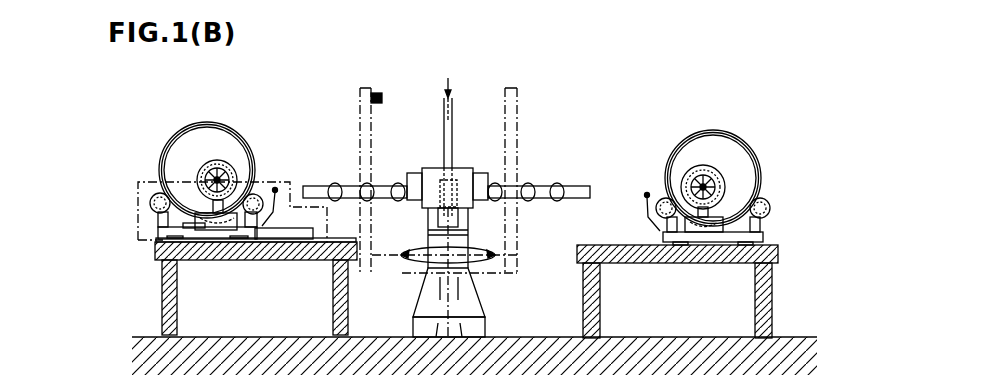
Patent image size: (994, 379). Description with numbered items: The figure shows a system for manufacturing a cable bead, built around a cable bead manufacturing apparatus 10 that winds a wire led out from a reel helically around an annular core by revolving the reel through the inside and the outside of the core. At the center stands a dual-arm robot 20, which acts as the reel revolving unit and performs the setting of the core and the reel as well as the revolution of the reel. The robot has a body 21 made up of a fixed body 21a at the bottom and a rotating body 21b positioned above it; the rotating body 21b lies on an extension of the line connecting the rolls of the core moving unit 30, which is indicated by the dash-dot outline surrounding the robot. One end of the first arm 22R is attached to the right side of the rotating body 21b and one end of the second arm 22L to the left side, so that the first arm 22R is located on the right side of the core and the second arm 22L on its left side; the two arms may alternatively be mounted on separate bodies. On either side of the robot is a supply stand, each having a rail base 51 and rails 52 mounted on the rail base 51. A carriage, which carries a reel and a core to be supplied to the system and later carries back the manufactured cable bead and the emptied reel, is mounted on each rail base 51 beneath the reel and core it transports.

The cable bead manufacturing apparatus 10 is at (448, 118).
The dual-arm robot 20 is at (466, 158).
The body 21 is at (401, 209).
The fixed body 21a is at (433, 302).
The rotating body 21b is at (428, 204).
The first arm 22R is at (368, 185).
The second arm 22L is at (513, 186).
The core moving unit 30 is at (517, 103).
The rail base 51 is at (155, 255).
The rail 52 is at (155, 238).